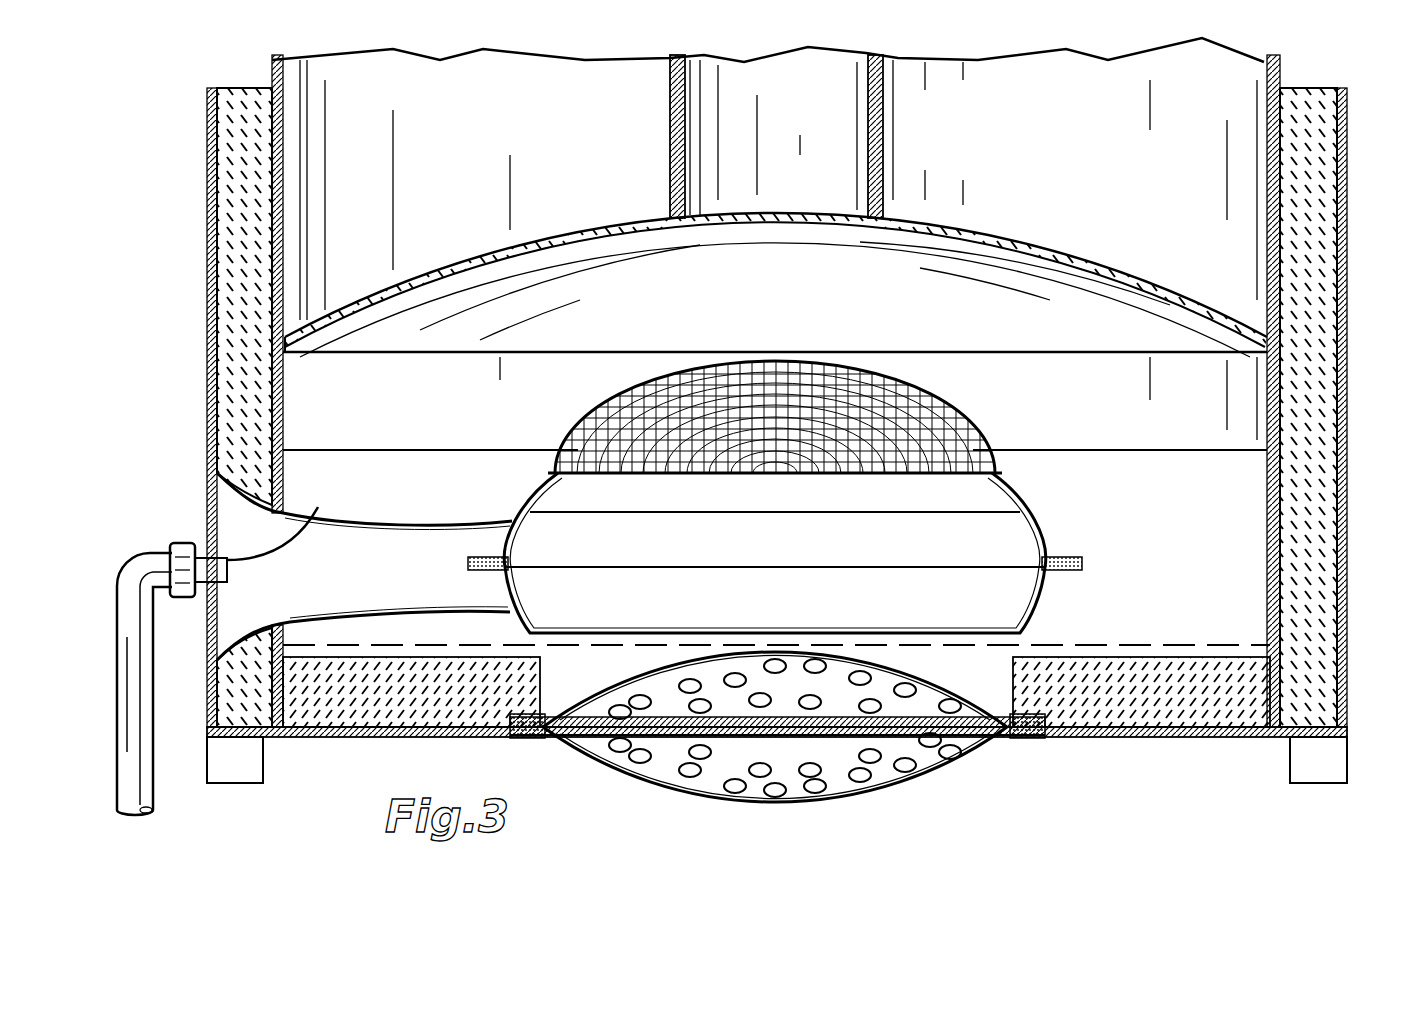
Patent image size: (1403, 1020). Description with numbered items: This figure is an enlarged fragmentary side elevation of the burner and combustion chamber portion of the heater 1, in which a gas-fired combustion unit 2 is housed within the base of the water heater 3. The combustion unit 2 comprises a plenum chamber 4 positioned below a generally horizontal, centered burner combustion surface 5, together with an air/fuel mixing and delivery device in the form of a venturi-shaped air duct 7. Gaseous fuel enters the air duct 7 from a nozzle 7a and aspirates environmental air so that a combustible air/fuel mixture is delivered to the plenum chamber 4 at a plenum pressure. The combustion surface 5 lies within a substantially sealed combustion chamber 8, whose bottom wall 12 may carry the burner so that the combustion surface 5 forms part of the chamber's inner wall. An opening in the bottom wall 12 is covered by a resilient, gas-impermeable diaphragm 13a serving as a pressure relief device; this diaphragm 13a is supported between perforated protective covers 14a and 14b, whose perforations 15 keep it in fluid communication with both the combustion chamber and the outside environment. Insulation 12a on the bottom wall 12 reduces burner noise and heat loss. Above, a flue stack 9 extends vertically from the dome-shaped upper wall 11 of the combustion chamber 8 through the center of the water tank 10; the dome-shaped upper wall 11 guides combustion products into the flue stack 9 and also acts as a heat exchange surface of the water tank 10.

The heater 1 is at (1232, 283).
The combustion unit 2 is at (1052, 508).
The water heater 3 is at (1343, 223).
The plenum chamber 4 is at (998, 600).
The combustion surface 5 is at (952, 418).
The air duct 7 is at (350, 552).
The nozzle 7a is at (318, 510).
The combustion chamber 8 is at (817, 277).
The flue stack 9 is at (827, 137).
The water tank 10 is at (1094, 121).
The dome-shaped upper wall 11 is at (1092, 262).
The bottom wall 12 is at (1120, 730).
The insulation 12a is at (417, 708).
The diaphragm 13a is at (800, 735).
The inner perforated protective cover 14a is at (937, 673).
The outer perforated protective cover 14b is at (933, 773).
The perforations 15 is at (690, 782).